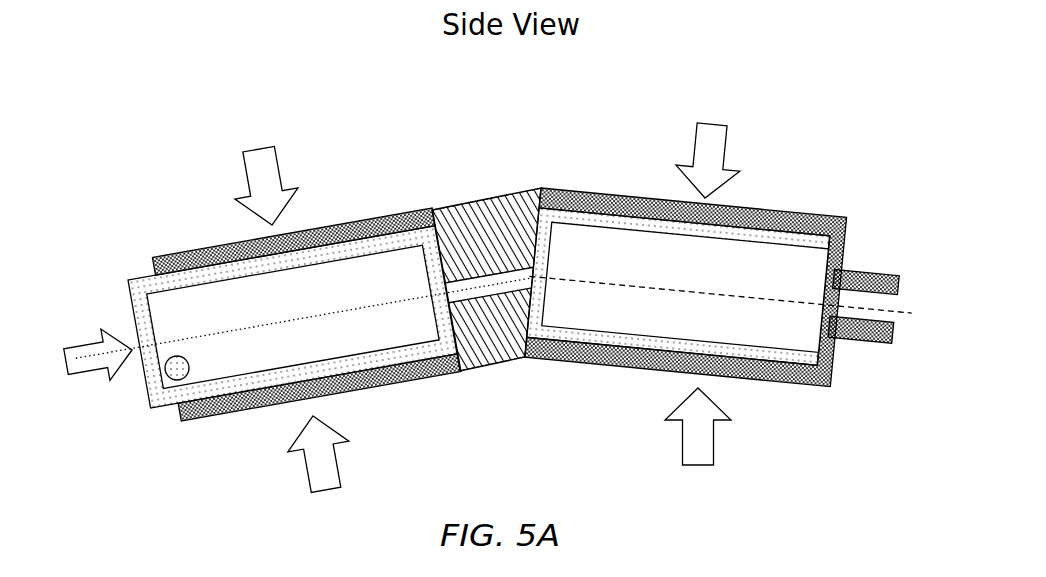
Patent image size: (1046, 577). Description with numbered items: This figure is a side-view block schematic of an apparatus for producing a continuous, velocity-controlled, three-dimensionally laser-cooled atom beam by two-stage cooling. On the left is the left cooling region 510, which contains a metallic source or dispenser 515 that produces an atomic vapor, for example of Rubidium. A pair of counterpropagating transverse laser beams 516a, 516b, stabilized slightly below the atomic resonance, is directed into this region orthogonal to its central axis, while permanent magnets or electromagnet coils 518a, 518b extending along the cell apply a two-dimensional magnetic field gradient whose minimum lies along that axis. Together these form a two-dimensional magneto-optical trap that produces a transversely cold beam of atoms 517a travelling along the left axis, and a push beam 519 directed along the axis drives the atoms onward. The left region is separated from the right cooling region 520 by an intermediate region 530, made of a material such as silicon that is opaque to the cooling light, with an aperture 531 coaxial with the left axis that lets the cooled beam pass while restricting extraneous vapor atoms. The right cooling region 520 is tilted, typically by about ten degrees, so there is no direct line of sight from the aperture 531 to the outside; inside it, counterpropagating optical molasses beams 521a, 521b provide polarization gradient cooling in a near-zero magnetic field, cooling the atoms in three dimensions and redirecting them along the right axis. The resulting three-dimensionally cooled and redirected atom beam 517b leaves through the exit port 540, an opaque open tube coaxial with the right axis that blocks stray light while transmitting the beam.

The left cooling region 510 is at (293, 317).
The metallic source or dispenser 515 is at (177, 370).
The transverse laser beam 516a is at (288, 155).
The transverse laser beam 516b is at (302, 473).
The transversely cold beam of atoms 517a is at (337, 317).
The 3D-cooled and redirected atom beam 517b is at (913, 315).
The permanent magnet or electromagnet coil 518a is at (150, 257).
The permanent magnet or electromagnet coil 518b is at (193, 420).
The push beam 519 is at (90, 393).
The right cooling region 520 is at (686, 287).
The optical molasses laser beam 521a is at (737, 157).
The optical molasses laser beam 521b is at (670, 442).
The intermediate region 530 is at (520, 355).
The aperture 531 is at (492, 257).
The exit port 540 is at (883, 307).